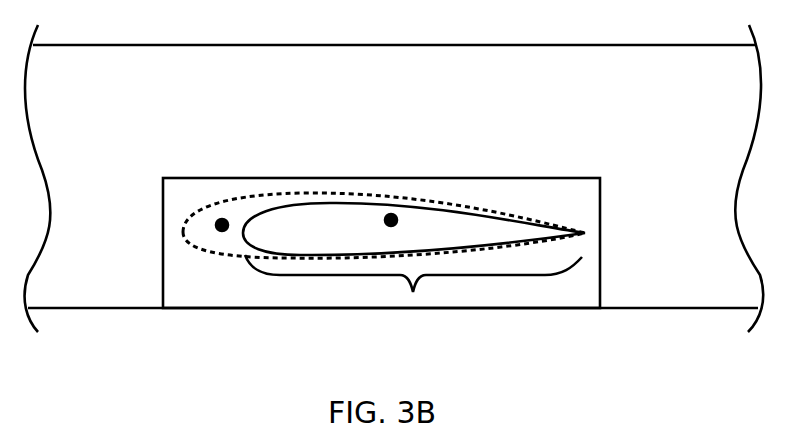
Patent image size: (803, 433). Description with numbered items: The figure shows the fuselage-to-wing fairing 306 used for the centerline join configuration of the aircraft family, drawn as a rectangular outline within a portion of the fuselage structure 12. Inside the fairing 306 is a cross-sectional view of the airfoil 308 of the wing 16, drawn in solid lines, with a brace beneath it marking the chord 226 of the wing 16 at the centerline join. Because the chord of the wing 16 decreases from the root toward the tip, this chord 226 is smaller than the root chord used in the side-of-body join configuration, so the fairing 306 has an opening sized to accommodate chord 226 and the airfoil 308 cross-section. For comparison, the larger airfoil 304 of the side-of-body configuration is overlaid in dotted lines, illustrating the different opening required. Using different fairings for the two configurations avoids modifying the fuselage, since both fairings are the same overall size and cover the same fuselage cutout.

The aircraft structure / wing section 12 is at (73, 85).
The wing 16 is at (300, 241).
The chord 226 is at (413, 292).
The airfoil 304 is at (222, 219).
The fairing 306 is at (487, 177).
The airfoil 308 is at (391, 214).